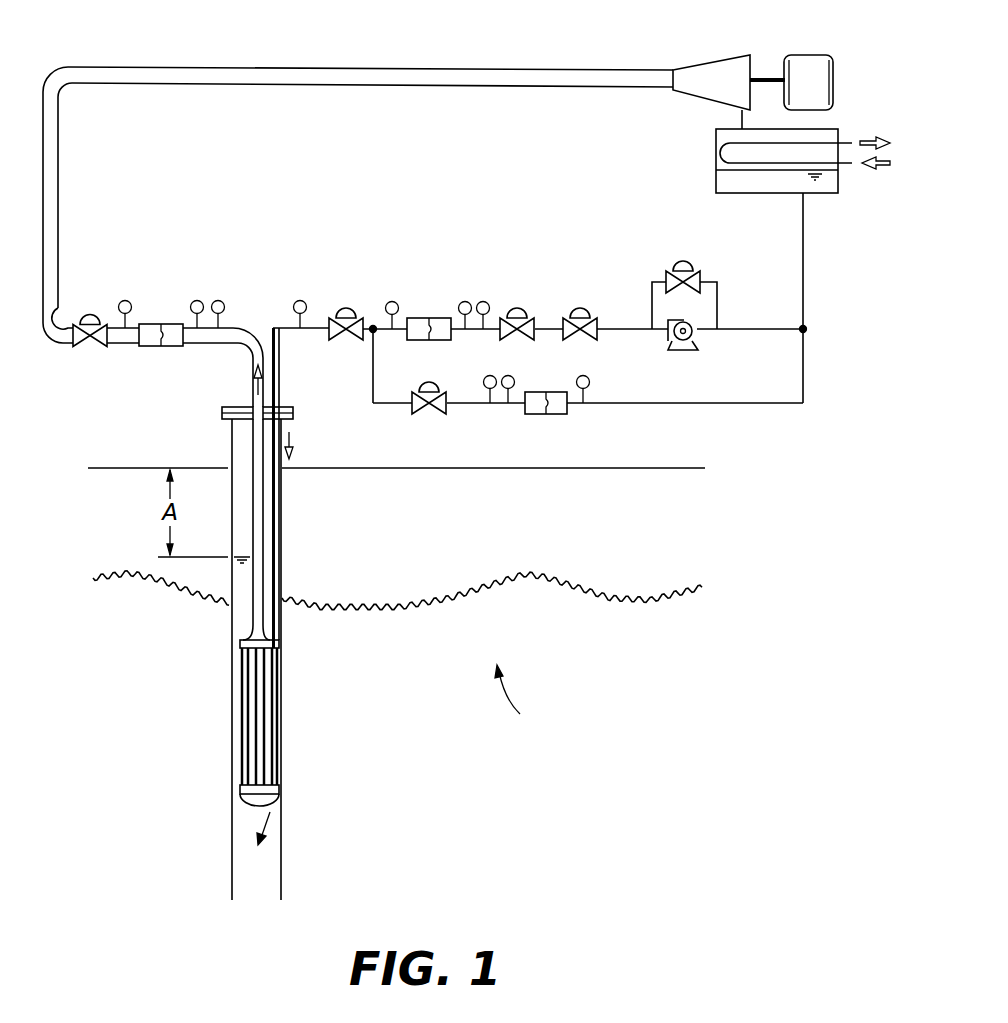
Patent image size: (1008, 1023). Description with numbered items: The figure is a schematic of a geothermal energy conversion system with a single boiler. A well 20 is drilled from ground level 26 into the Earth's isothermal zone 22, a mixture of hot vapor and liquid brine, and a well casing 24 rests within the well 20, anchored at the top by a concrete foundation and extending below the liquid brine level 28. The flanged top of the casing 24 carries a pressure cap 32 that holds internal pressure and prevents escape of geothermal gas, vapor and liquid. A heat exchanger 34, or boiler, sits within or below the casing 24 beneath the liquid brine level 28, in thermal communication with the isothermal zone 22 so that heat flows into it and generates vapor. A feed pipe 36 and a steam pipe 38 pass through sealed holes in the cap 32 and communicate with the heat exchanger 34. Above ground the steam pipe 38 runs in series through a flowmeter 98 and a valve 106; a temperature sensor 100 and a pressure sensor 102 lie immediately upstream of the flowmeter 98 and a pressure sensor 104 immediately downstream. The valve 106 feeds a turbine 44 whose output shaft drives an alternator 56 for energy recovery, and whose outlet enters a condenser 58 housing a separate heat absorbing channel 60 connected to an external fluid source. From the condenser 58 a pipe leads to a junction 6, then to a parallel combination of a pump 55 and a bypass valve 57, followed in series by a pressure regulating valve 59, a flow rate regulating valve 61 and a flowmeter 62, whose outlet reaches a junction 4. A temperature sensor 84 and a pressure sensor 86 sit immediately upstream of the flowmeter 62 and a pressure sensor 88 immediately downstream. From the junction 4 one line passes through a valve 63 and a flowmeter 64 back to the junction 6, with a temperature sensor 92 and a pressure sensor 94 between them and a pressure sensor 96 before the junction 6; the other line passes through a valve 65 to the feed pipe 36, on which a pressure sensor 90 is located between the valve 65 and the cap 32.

The junction 4 is at (375, 326).
The junction 6 is at (806, 331).
The well 20 is at (282, 820).
The isothermal zone 22 is at (523, 700).
The well casing 24 is at (232, 432).
The ground level 26 is at (655, 470).
The liquid brine level 28 is at (240, 553).
The pressure cap 32 is at (240, 406).
The heat exchanger 34 is at (240, 700).
The feed pipe 36 is at (276, 488).
The steam pipe 38 is at (264, 343).
The turbine 44 is at (736, 62).
The pump 55 is at (690, 351).
The alternator 56 is at (812, 55).
The bypass valve 57 is at (686, 260).
The condenser 58 is at (826, 134).
The pressure regulating valve 59 is at (584, 306).
The heat absorbing channel 60 is at (830, 143).
The flow rate regulating valve 61 is at (520, 306).
The flowmeter 62 is at (421, 318).
The valve 63 is at (423, 410).
The flowmeter 64 is at (553, 415).
The valve 65 is at (346, 307).
The temperature sensor 84 is at (485, 301).
The pressure sensor 86 is at (466, 301).
The pressure sensor 88 is at (394, 301).
The pressure sensor 90 is at (300, 300).
The temperature sensor 92 is at (487, 375).
The pressure sensor 94 is at (511, 375).
The pressure sensor 96 is at (587, 386).
The flowmeter 98 is at (155, 324).
The temperature sensor 100 is at (218, 300).
The pressure sensor 102 is at (197, 300).
The pressure sensor 104 is at (125, 300).
The valve 106 is at (90, 316).